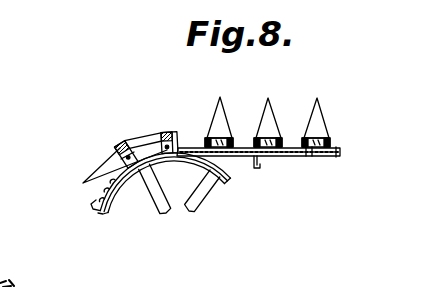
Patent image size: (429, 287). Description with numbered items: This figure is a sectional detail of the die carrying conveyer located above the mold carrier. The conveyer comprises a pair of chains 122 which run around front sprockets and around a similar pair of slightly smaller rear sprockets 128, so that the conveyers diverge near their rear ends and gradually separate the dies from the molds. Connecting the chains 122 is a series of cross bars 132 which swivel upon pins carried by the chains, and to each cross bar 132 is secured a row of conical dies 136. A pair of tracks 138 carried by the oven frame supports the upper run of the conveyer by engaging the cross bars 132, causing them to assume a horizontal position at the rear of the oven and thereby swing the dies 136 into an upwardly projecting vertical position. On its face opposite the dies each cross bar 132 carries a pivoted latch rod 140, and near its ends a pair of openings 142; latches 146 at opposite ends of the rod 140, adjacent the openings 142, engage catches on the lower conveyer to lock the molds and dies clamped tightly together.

The chains 122 is at (148, 151).
The rear sprockets 128 is at (200, 193).
The cross bars 132 is at (120, 150).
The conical dies 136 is at (317, 113).
The tracks 138 is at (340, 150).
The latch rod 140 is at (307, 147).
The openings 142 is at (118, 172).
The latches 146 is at (311, 148).